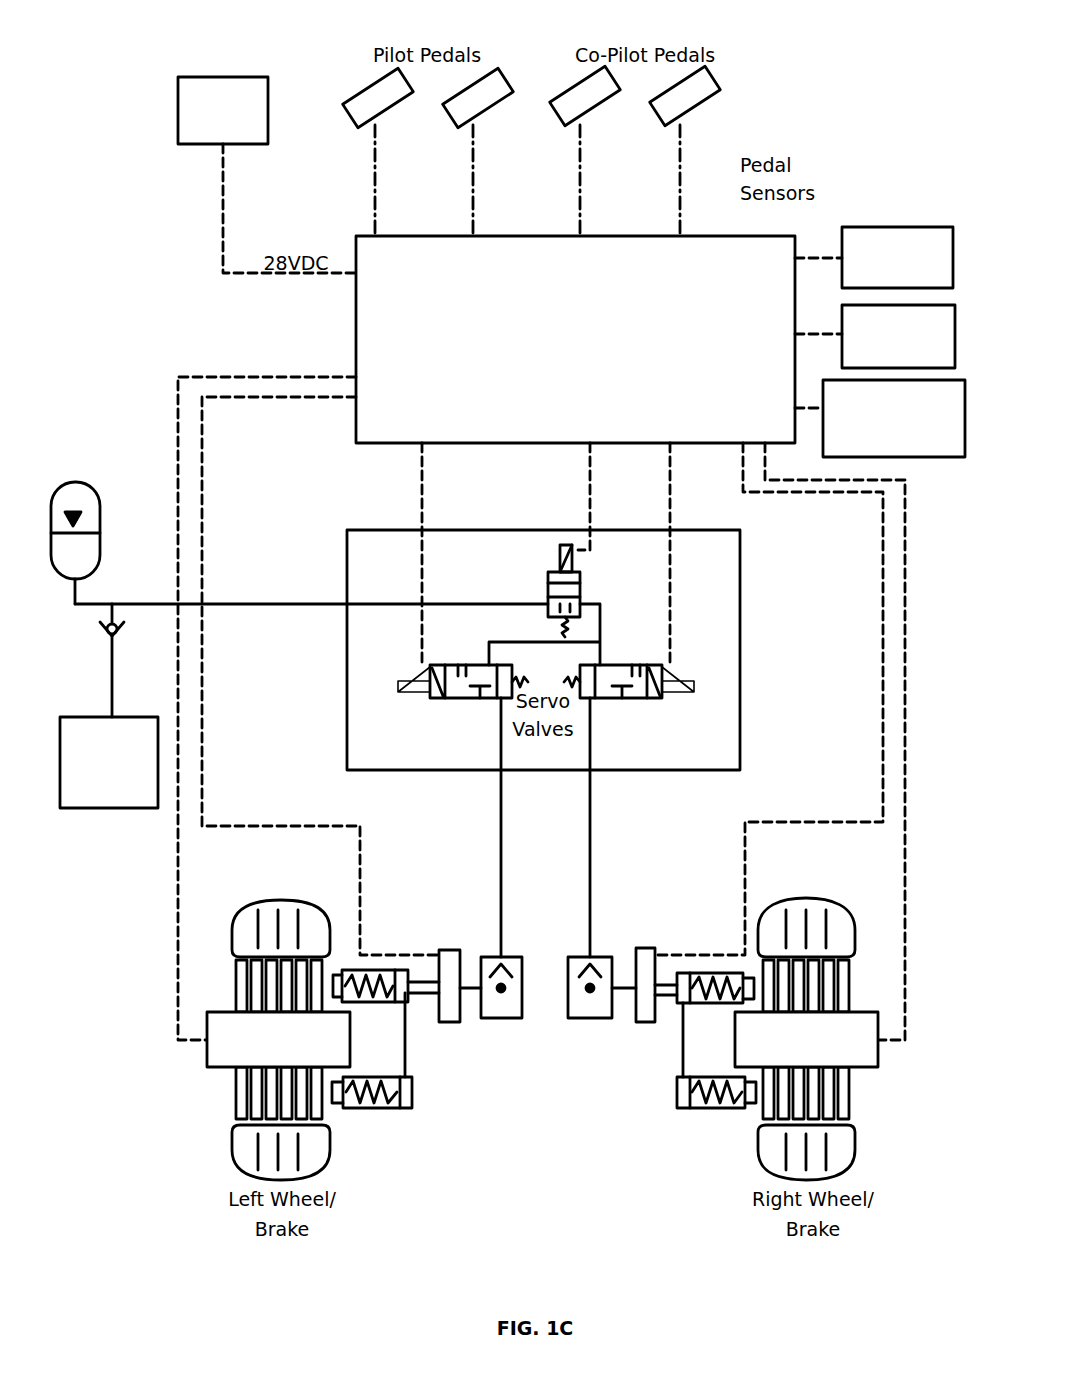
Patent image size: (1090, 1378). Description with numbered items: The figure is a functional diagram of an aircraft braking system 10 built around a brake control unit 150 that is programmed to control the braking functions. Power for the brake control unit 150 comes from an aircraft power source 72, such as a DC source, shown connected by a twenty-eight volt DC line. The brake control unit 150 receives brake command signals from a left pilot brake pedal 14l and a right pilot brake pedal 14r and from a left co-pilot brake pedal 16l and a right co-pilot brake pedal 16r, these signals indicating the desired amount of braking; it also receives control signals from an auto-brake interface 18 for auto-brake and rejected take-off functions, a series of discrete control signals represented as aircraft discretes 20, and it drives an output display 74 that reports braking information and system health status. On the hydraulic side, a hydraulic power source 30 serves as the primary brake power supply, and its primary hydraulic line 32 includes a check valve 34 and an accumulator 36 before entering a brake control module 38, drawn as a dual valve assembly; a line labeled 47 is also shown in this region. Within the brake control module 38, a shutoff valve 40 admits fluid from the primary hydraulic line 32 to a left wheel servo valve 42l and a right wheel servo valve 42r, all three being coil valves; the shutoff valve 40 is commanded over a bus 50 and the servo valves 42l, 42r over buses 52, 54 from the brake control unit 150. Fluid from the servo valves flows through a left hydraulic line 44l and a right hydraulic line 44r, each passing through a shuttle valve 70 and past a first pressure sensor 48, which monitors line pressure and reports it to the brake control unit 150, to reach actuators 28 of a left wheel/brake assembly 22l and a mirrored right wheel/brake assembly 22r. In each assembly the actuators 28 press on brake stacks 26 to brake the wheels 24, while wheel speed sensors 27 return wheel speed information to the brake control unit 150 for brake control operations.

The braking system 10 is at (163, 90).
The aircraft power source 72 is at (218, 77).
The left pilot brake pedal 14l is at (356, 88).
The right pilot brake pedal 14r is at (487, 78).
The left co-pilot brake pedal 16l is at (552, 98).
The right co-pilot brake pedal 16r is at (715, 86).
The auto-brake interface 18 is at (912, 227).
The aircraft discretes 20 is at (842, 322).
The output display 74 is at (823, 396).
The brake control unit 150 is at (518, 379).
The accumulator 36 is at (93, 482).
The primary hydraulic line 32 is at (140, 604).
The check valve 34 is at (98, 622).
The control line 47 is at (158, 693).
The hydraulic power source 30 is at (105, 808).
The brake control module 38 is at (645, 770).
The bus 52 is at (425, 483).
The bus 50 is at (590, 462).
The bus 54 is at (670, 578).
The shutoff valve 40 is at (580, 590).
The left wheel servo valve 42l is at (470, 698).
The right wheel servo valve 42r is at (622, 698).
The left hydraulic line 44l is at (501, 830).
The right hydraulic line 44r is at (590, 848).
The first pressure sensor 48 is at (450, 950).
The shuttle valve 70 is at (508, 957).
The wheel 24 is at (265, 902).
The brake stack 26 is at (236, 995).
The actuator 28 is at (355, 1002).
The wheel speed sensor 27 is at (207, 1050).
The left wheel/brake assembly 22l is at (218, 1170).
The right wheel/brake assembly 22r is at (882, 1110).